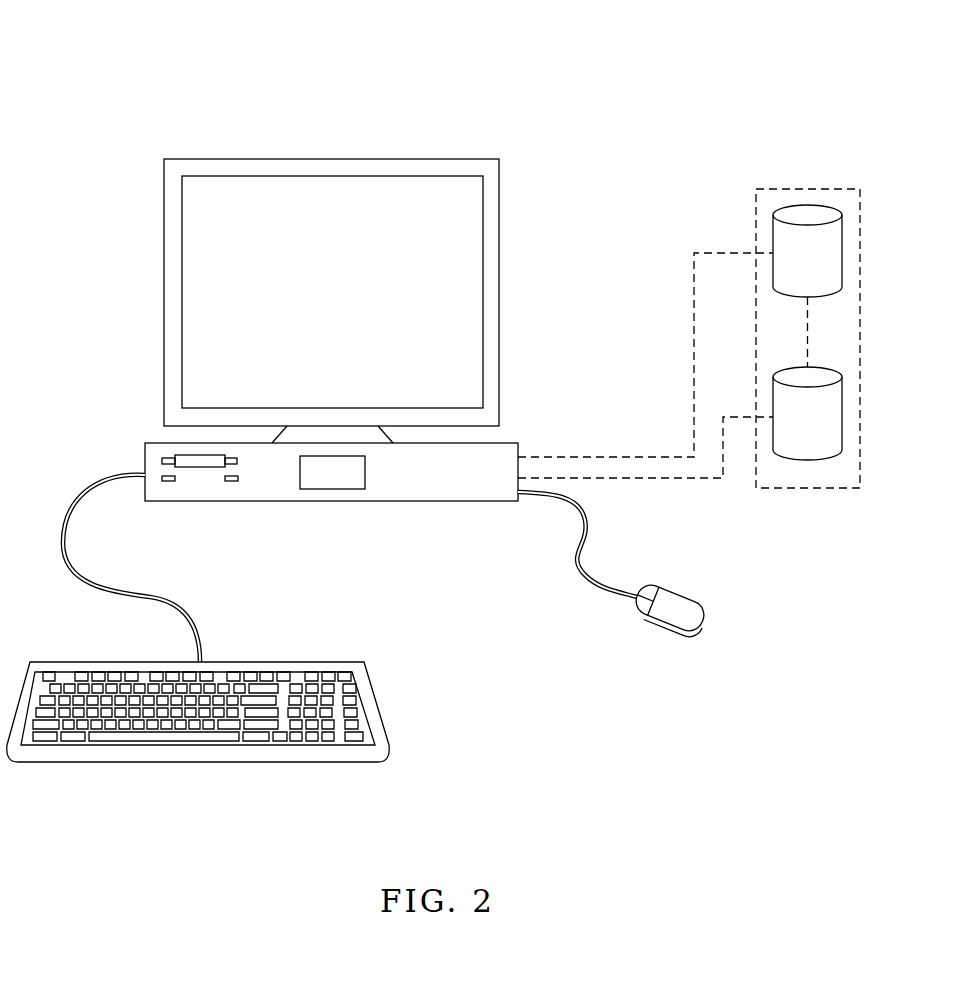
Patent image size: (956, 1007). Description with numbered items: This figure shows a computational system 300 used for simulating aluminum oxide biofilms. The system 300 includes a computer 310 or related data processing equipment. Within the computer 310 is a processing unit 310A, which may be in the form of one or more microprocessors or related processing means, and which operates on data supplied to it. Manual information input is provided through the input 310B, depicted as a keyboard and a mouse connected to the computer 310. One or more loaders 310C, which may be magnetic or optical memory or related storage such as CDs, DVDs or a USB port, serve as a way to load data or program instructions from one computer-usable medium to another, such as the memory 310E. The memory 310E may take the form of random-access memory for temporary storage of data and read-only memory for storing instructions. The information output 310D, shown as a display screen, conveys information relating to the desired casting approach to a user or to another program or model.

The system 300 is at (124, 101).
The computer 310 is at (203, 142).
The processing unit 310A is at (347, 489).
The input 310B is at (159, 784).
The loaders 310C is at (200, 467).
The information output 310D is at (363, 158).
The memory 310E is at (806, 189).